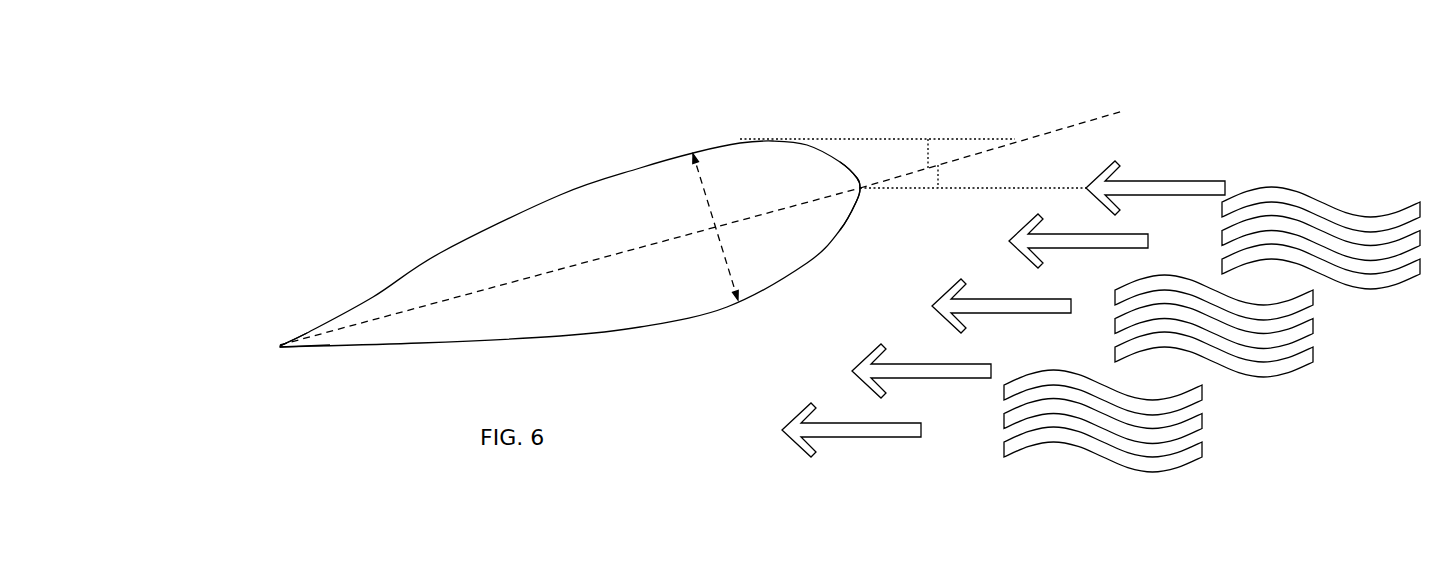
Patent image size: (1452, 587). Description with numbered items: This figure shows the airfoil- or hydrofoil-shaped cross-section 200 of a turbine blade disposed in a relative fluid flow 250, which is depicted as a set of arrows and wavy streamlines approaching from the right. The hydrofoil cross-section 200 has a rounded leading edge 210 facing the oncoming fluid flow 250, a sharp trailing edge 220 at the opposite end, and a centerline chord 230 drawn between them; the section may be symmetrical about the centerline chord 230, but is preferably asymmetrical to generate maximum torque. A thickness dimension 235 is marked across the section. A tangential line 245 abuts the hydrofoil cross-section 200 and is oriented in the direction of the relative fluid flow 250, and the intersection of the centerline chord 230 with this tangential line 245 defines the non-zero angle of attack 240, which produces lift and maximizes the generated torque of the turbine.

The hydrofoil cross-section 200 is at (710, 102).
The leading edge 210 is at (859, 186).
The trailing edge 220 is at (278, 348).
The centerline chord 230 is at (578, 263).
The thickness 235 is at (700, 187).
The angle of attack 240 is at (928, 153).
The tangential line 245 is at (782, 139).
The relative fluid flow 250 is at (1203, 181).